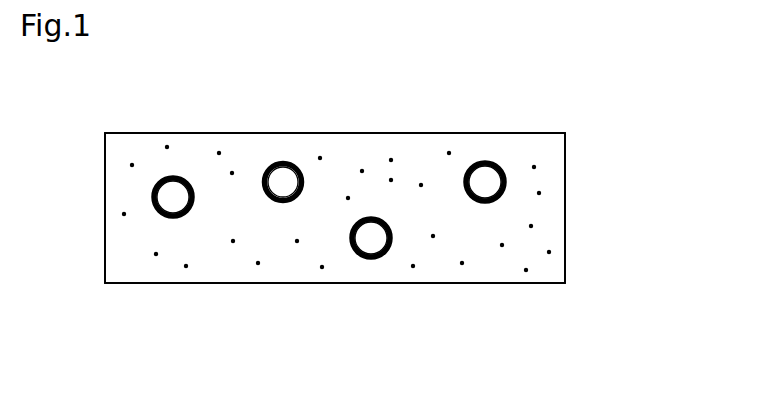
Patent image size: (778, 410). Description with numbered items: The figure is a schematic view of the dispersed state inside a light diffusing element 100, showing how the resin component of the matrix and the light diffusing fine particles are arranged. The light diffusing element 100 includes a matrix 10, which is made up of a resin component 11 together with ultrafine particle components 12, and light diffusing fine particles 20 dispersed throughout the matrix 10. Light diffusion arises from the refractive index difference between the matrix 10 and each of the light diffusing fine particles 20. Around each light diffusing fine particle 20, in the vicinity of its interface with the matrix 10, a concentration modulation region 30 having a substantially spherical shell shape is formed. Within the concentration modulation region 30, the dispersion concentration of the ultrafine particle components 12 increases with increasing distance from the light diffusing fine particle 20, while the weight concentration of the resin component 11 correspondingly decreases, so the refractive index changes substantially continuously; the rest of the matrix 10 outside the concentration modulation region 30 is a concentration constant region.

The light diffusing element 100 is at (598, 63).
The matrix 10 is at (458, 359).
The resin component 11 is at (440, 266).
The ultrafine particle components 12 is at (413, 267).
The light diffusing fine particles 20 is at (280, 178).
The concentration modulation region 30 is at (302, 167).